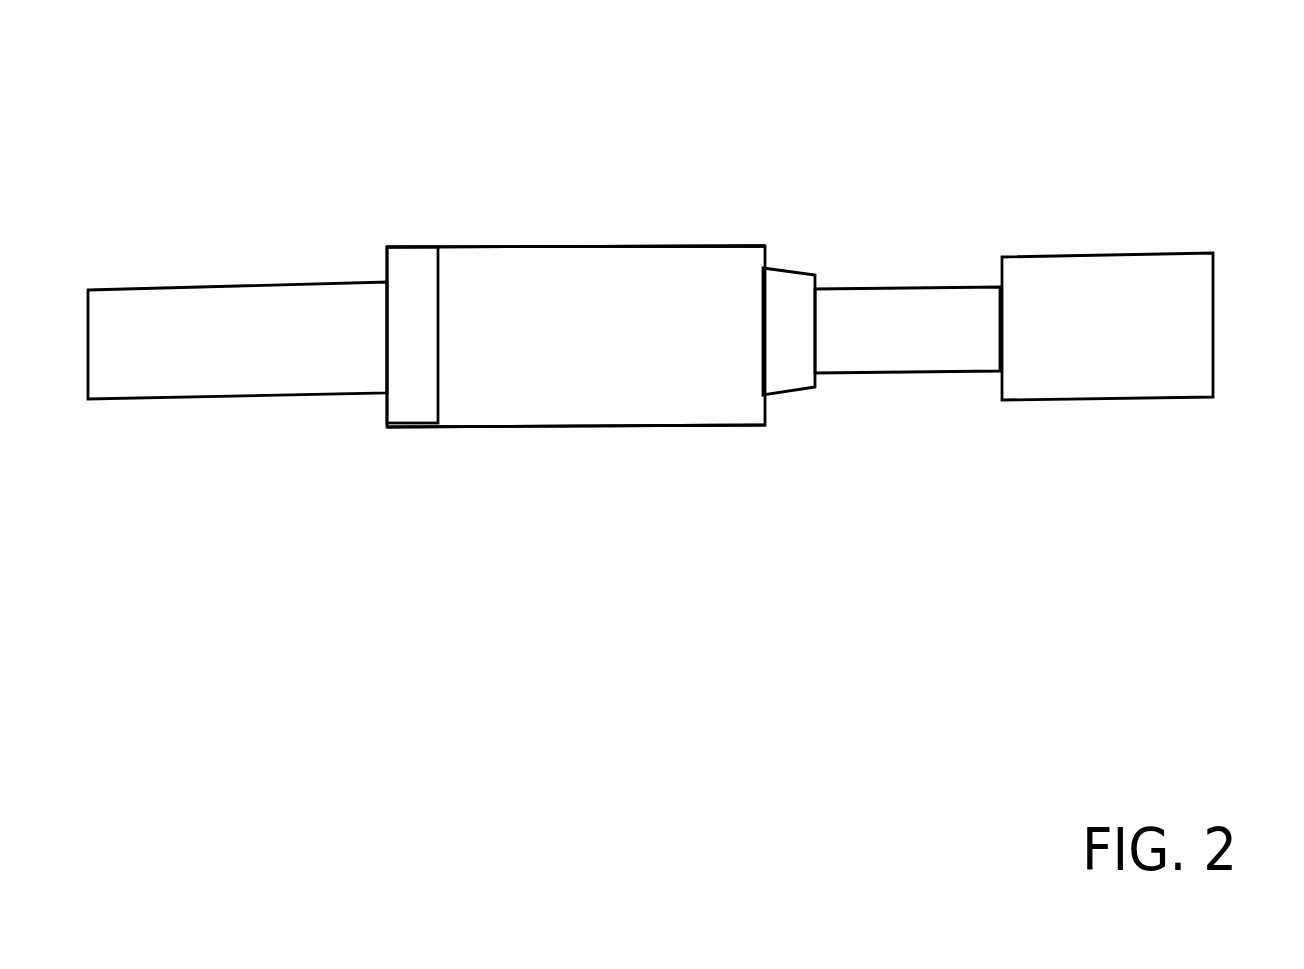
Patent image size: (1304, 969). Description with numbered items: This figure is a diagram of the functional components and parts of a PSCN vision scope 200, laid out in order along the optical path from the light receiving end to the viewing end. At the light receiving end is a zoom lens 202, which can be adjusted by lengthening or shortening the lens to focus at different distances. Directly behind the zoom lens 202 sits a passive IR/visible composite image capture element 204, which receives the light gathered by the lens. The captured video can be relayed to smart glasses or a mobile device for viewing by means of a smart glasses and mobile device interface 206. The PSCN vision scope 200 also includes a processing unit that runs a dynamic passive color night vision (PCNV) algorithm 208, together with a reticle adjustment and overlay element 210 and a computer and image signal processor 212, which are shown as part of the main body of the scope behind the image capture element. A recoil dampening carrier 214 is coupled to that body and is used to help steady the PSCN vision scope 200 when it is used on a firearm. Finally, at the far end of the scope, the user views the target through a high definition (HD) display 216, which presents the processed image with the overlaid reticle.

The PSCN vision scope 200 is at (307, 48).
The zoom lens 202 is at (237, 313).
The passive IR/visible composite image capture element 204 is at (390, 370).
The smart glasses and mobile device interface 206 is at (576, 304).
The dynamic passive color night vision (PCNV) algorithm 208 is at (576, 484).
The reticle adjustment and overlay element 210 is at (576, 192).
The computer and image signal processor 212 is at (682, 214).
The recoil dampening carrier 214 is at (755, 373).
The high definition (HD) display 216 is at (1152, 314).